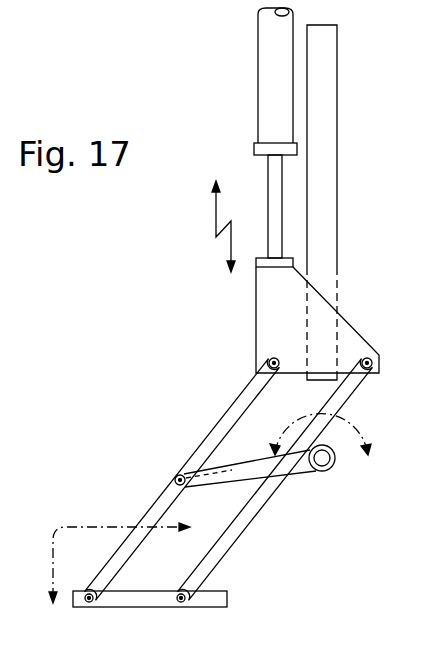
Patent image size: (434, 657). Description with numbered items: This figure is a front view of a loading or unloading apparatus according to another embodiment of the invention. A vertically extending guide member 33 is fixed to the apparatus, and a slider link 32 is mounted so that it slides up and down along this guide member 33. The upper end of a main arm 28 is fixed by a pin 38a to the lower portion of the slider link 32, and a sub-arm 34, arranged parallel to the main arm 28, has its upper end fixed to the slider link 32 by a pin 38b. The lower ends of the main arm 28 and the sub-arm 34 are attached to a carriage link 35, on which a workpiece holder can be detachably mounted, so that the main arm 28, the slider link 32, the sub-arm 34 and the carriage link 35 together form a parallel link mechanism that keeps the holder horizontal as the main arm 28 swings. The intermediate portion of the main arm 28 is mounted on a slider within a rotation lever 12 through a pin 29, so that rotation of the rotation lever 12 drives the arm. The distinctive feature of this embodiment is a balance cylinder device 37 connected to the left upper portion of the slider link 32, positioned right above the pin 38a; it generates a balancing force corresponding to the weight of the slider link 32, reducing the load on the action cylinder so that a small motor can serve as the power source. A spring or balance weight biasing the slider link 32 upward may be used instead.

The rotation lever 12 is at (318, 470).
The main arm 28 is at (208, 428).
The pin 29 is at (177, 477).
The slider link 32 is at (357, 331).
The guide member 33 is at (337, 128).
The sub-arm 34 is at (265, 506).
The carriage link 35 is at (138, 597).
The balance cylinder device 37 is at (258, 108).
The pin 38a is at (269, 358).
The pin 38b is at (372, 372).